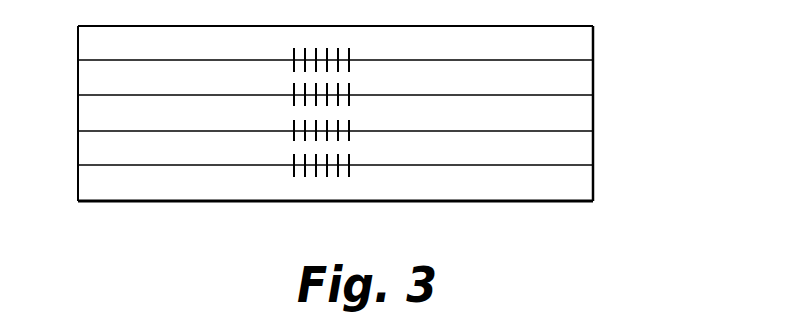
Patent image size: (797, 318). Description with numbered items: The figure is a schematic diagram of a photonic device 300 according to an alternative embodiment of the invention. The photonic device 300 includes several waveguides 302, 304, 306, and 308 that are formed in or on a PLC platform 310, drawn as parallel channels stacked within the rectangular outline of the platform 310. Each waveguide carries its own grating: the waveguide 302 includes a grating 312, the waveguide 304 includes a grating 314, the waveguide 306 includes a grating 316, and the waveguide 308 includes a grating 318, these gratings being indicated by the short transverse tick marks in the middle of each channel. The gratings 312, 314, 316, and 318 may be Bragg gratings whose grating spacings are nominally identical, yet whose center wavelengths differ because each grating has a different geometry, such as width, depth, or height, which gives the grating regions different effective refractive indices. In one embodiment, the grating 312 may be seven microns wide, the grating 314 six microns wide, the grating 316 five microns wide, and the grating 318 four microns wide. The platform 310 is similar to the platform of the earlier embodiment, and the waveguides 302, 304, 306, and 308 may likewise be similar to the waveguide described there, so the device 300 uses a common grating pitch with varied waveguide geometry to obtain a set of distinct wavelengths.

The photonic device 300 is at (692, 175).
The waveguide 302 is at (560, 60).
The waveguide 304 is at (560, 95).
The waveguide 306 is at (98, 131).
The waveguide 308 is at (98, 165).
The PLC platform 310 is at (503, 203).
The grating 312 is at (293, 57).
The grating 314 is at (293, 91).
The grating 316 is at (350, 134).
The grating 318 is at (350, 169).